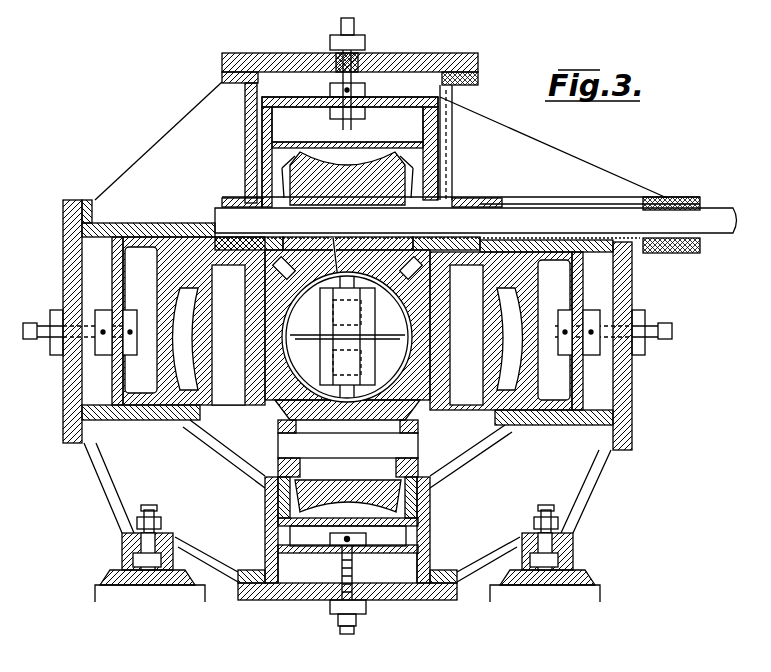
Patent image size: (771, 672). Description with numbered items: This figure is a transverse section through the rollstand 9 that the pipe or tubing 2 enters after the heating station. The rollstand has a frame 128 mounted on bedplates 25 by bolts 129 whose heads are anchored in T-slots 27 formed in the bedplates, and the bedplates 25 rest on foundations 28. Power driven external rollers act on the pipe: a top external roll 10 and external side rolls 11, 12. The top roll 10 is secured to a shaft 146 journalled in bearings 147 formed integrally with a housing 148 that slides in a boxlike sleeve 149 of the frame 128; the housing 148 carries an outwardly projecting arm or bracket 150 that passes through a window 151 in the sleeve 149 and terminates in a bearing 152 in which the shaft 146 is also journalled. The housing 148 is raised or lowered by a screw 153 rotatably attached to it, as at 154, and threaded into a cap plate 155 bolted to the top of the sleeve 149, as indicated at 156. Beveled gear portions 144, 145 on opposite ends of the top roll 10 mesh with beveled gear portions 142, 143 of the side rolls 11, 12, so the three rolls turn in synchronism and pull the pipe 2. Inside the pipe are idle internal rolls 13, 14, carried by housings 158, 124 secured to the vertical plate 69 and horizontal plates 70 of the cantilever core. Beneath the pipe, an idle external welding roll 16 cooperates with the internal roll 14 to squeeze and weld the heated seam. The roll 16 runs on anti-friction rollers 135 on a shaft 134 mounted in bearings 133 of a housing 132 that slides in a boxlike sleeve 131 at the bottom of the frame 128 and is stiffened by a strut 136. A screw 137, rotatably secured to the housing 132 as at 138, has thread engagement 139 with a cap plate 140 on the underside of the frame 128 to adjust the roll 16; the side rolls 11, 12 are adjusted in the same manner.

The rollstand 9 is at (203, 100).
The cap plate 155 is at (248, 53).
The screw 153 is at (356, 40).
The bolted securing point of cap plate 156 is at (386, 60).
The housing 148 is at (432, 70).
The boxlike sleeve 149 is at (244, 117).
The beveled gear portion 144 is at (248, 150).
The rotatable securing point of screw 138 is at (328, 92).
The strut 136 is at (325, 142).
The rotatable attachment point of screw 154 is at (347, 132).
The top external roll 10 is at (374, 170).
The beveled gear portion 145 is at (425, 160).
The bearings 147 is at (230, 198).
The opening or window 151 is at (478, 113).
The arm or bracket 150 is at (527, 133).
The internal roll 13 is at (476, 220).
The shaft 146 is at (714, 220).
The bearing 152 is at (670, 197).
The beveled gear portion 142 is at (164, 321).
The beveled gear portion 143 is at (531, 345).
The external side roll 11 is at (192, 348).
The external side roll 12 is at (500, 360).
The pipe or tubing 2 is at (325, 270).
The housing 158 is at (397, 263).
The vertical plate 69 is at (347, 258).
The horizontal plates 70 is at (310, 335).
The housing 124 is at (280, 400).
The external welding roll 16 is at (375, 390).
The internal welding roll 14 is at (350, 395).
The bearings 133 is at (400, 436).
The shaft 134 is at (410, 452).
The anti-friction rollers 135 is at (420, 478).
The boxlike sleeve 131 is at (432, 528).
The cap plate 140 is at (452, 603).
The screw thread engagement 139 is at (336, 580).
The screw 137 is at (356, 628).
The housing 132 is at (398, 560).
The frame 128 is at (596, 478).
The bolts 129 is at (152, 508).
The T-slots 27 is at (133, 562).
The bedplates 25 is at (108, 575).
The foundations 28 is at (95, 594).